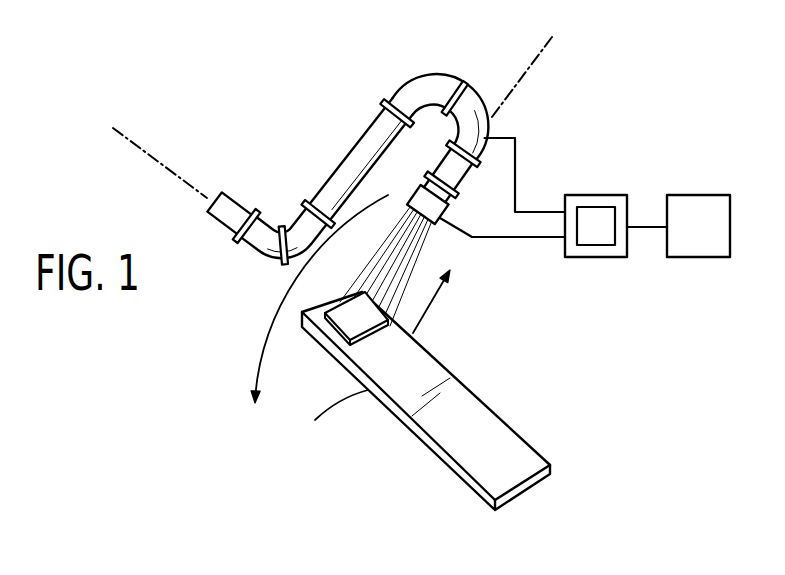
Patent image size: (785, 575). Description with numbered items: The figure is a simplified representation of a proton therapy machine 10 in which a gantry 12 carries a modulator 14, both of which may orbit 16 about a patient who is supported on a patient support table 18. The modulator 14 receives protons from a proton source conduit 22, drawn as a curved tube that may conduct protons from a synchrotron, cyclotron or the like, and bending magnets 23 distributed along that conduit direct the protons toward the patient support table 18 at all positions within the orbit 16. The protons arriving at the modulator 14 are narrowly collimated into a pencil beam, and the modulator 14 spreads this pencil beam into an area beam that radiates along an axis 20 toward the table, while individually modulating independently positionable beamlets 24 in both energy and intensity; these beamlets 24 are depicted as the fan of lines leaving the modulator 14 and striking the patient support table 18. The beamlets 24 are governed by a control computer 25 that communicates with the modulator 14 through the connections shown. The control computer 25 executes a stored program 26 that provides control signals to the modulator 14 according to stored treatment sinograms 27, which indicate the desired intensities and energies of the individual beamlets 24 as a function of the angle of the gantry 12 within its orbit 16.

The proton therapy machine 10 is at (577, 47).
The gantry 12 is at (494, 71).
The modulator 14 is at (441, 226).
The orbit 16 is at (272, 319).
The patient support table 18 is at (492, 436).
The axis 20 is at (522, 78).
The proton source conduit 22 is at (362, 146).
The bending magnets 23 is at (463, 81).
The beamlets 24 is at (392, 296).
The control computer 25 is at (594, 258).
The stored program 26 is at (598, 206).
The treatment sinograms 27 is at (697, 258).